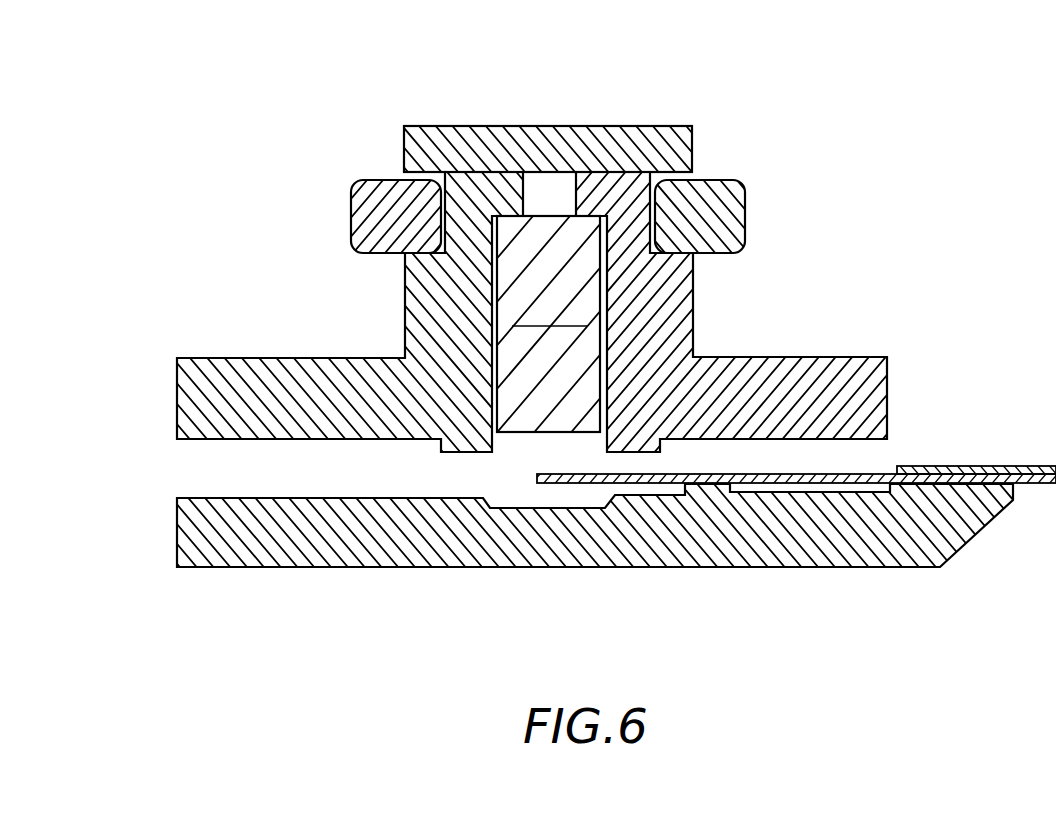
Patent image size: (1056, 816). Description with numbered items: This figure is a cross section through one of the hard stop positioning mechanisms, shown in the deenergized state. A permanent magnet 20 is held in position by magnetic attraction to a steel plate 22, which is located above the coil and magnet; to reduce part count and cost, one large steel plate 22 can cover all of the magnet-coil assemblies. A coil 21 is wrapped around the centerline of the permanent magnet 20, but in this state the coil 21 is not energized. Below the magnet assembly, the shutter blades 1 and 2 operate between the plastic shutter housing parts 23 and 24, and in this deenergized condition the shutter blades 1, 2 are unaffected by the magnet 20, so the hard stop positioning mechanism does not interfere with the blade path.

The shutter blade 1 is at (566, 488).
The shutter blade 2 is at (934, 466).
The permanent magnet 20 is at (515, 277).
The coil 21 is at (352, 212).
The steel plate 22 is at (428, 126).
The plastic shutter housing part 23 is at (257, 358).
The plastic shutter housing part 24 is at (245, 568).